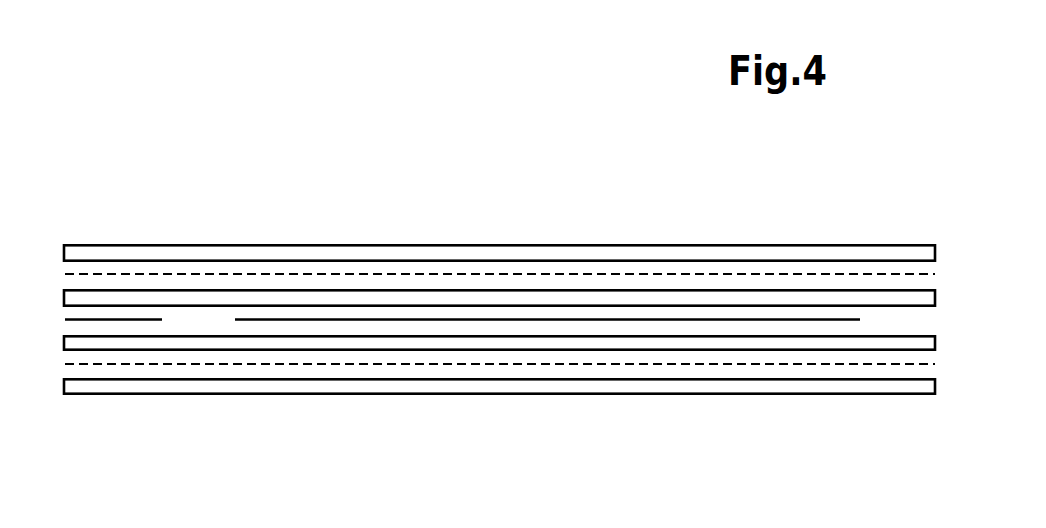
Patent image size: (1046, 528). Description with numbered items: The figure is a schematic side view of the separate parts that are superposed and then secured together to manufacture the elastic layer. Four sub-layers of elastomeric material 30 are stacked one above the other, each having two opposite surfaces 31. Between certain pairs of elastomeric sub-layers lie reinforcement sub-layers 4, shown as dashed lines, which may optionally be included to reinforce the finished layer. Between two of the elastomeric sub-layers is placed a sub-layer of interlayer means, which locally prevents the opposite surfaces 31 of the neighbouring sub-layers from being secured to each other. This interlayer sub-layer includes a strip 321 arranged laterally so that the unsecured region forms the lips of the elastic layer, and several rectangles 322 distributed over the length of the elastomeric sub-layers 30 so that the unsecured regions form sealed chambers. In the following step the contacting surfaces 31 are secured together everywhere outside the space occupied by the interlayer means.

The sub-layers of elastomeric material 30 is at (188, 247).
The opposite surfaces 31 is at (349, 250).
The reinforcement sub-layers 4 is at (578, 274).
The strip 321 is at (110, 334).
The rectangles 322 is at (381, 334).